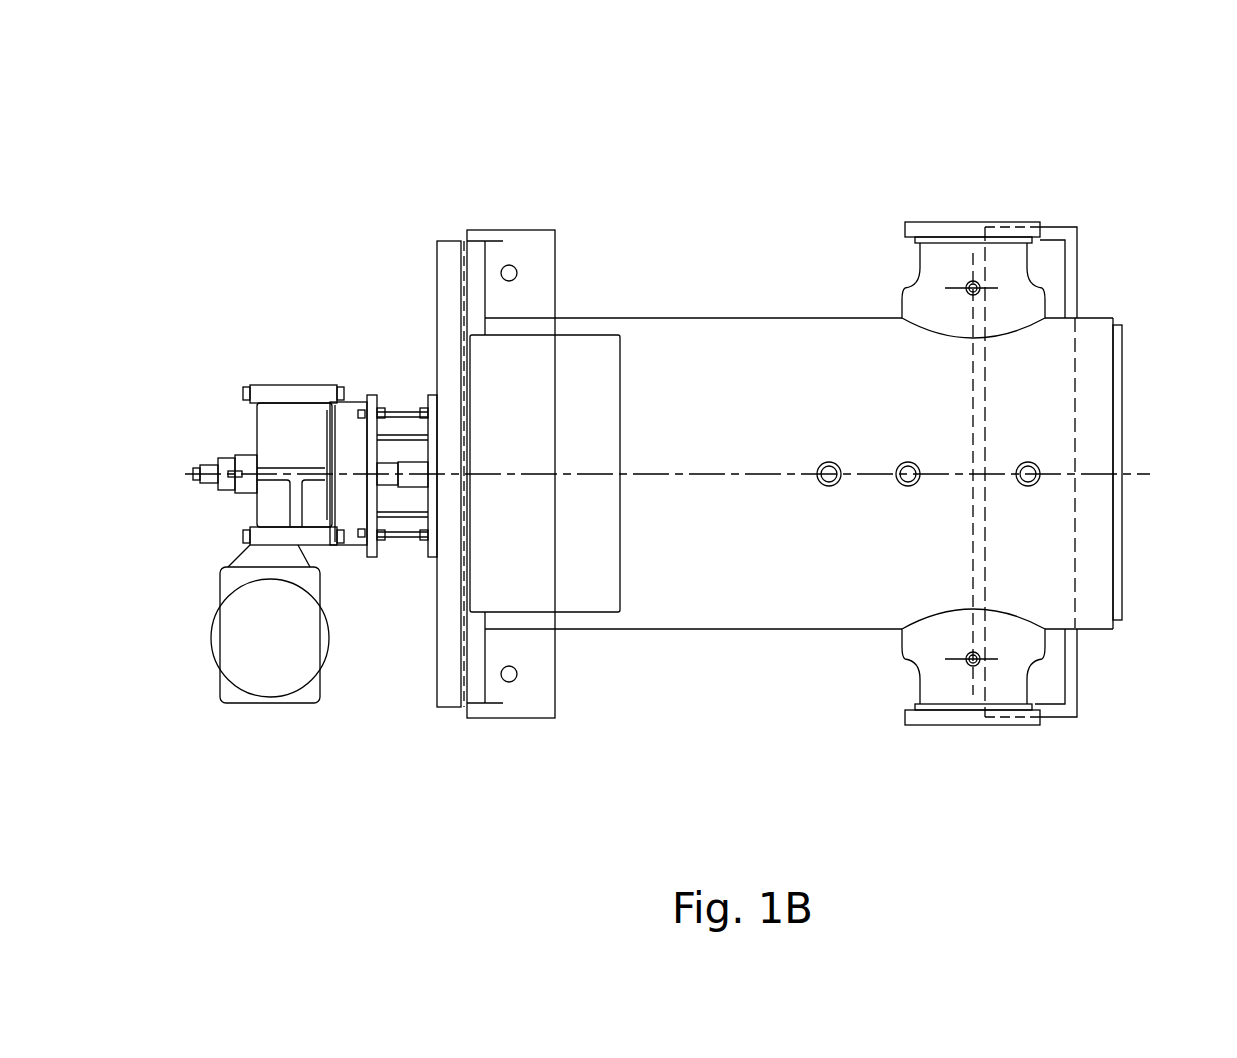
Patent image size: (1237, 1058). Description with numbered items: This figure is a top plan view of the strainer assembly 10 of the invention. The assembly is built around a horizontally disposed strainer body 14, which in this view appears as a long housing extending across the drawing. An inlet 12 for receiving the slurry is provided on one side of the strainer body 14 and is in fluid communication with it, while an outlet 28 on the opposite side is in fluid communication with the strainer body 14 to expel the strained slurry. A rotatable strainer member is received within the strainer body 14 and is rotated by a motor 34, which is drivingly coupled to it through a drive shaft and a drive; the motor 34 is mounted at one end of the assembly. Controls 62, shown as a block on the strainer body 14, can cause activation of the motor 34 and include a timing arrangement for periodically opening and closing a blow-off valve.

The strainer assembly 10 is at (1110, 147).
The inlet 12 is at (952, 222).
The strainer body 14 is at (684, 567).
The outlet 28 is at (952, 725).
The motor 34 is at (250, 638).
The controls 62 is at (562, 363).